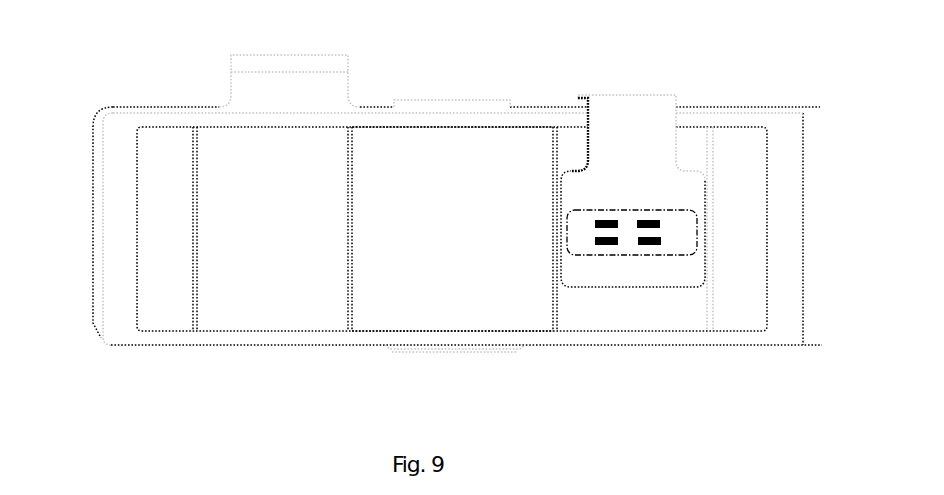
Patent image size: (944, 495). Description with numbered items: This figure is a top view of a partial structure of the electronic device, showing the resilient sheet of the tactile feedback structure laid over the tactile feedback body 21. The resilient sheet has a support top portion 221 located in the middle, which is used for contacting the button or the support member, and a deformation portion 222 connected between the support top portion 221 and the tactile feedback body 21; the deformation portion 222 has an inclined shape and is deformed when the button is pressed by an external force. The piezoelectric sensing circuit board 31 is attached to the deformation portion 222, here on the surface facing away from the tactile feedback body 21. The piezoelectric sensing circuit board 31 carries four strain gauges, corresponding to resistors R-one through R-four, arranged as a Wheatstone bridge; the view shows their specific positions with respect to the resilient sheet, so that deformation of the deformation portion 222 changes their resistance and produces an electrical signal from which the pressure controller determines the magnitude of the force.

The tactile feedback body 21 is at (117, 118).
The support top portion 221 is at (441, 281).
The deformation portion 222 is at (253, 292).
The piezoelectric sensing circuit board 31 is at (683, 198).